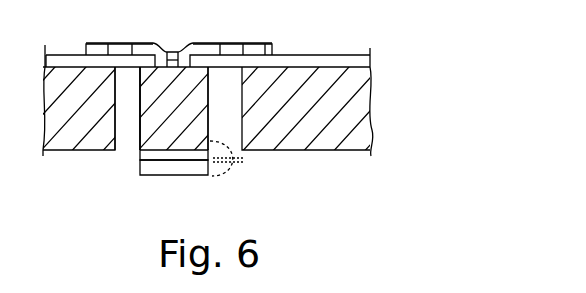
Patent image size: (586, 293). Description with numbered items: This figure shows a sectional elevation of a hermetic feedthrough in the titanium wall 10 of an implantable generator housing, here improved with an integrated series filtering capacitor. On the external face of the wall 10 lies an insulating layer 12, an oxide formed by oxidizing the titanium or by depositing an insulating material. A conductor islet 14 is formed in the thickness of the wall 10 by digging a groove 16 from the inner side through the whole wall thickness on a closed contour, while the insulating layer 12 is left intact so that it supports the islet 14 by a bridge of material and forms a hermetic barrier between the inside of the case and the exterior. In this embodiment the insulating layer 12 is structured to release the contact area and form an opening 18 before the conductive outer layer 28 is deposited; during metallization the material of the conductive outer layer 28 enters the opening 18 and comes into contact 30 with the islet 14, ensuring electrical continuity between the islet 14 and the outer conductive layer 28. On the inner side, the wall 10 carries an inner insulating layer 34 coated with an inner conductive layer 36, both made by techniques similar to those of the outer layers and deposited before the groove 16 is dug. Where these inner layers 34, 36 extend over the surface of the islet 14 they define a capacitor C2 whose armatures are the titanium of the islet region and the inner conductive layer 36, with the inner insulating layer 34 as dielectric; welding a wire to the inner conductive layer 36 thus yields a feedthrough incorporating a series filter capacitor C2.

The wall of the metal housing 10 is at (327, 140).
The insulating layer 12 is at (305, 63).
The conductor islet 14 is at (148, 123).
The groove 16 is at (123, 143).
The opening 18 is at (168, 56).
The conductive outer layer 28 is at (250, 51).
The contact 30 is at (170, 68).
The inner insulating layer 34 is at (158, 154).
The inner conductive layer 36 is at (198, 167).
The series filter capacitor C2 is at (238, 170).